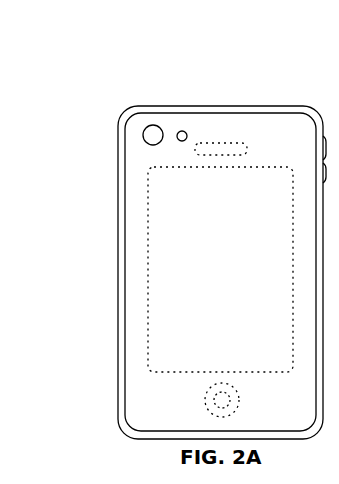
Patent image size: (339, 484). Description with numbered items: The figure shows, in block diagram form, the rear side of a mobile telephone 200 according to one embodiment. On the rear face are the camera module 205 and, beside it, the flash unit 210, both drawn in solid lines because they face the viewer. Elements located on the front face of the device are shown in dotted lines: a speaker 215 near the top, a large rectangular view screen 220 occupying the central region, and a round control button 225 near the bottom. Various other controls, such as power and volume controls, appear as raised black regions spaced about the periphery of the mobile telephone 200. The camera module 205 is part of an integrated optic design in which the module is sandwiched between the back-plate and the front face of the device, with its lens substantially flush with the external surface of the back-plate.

The mobile telephone 200 is at (216, 106).
The camera module 205 is at (143, 135).
The flash unit 210 is at (178, 140).
The speaker 215 is at (223, 154).
The view screen 220 is at (148, 258).
The control button 225 is at (204, 400).